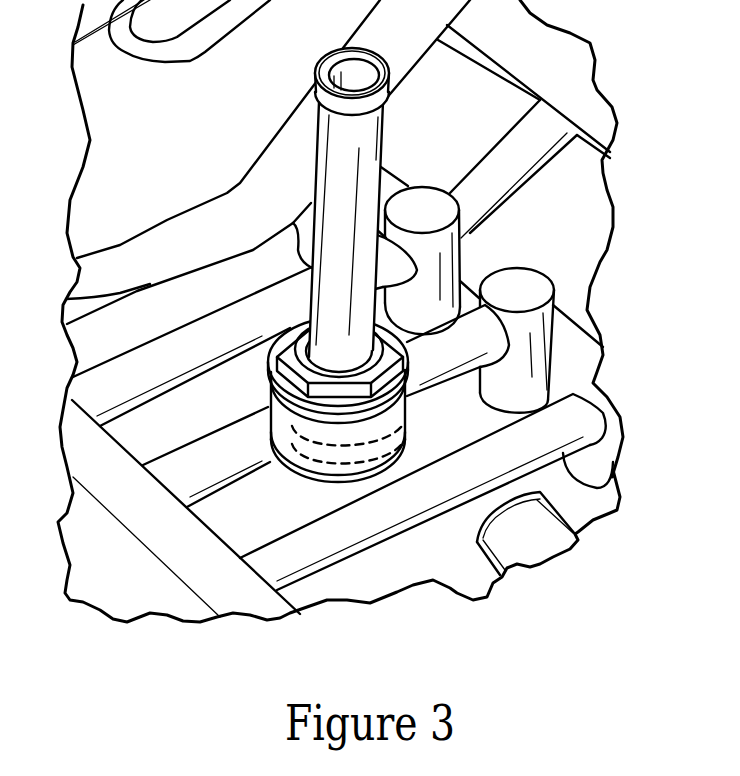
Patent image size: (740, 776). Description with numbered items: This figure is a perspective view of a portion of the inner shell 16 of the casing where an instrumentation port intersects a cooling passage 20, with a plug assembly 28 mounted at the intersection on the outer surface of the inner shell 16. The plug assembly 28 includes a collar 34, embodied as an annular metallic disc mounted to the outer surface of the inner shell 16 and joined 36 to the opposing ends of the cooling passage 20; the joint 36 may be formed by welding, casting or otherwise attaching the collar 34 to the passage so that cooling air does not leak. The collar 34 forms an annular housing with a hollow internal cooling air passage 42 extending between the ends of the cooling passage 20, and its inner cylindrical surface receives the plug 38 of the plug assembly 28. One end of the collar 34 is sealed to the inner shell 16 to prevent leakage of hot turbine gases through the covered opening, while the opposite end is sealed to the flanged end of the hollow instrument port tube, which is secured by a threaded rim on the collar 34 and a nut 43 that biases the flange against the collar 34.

The inner shell 16 is at (109, 572).
The cooling passage 20 is at (114, 389).
The plug assembly 28 is at (478, 388).
The collar 34 is at (363, 137).
The joint 36 is at (273, 419).
The plug 38 is at (405, 390).
The internal cooling air passage 42 is at (313, 462).
The nut 43 is at (290, 343).